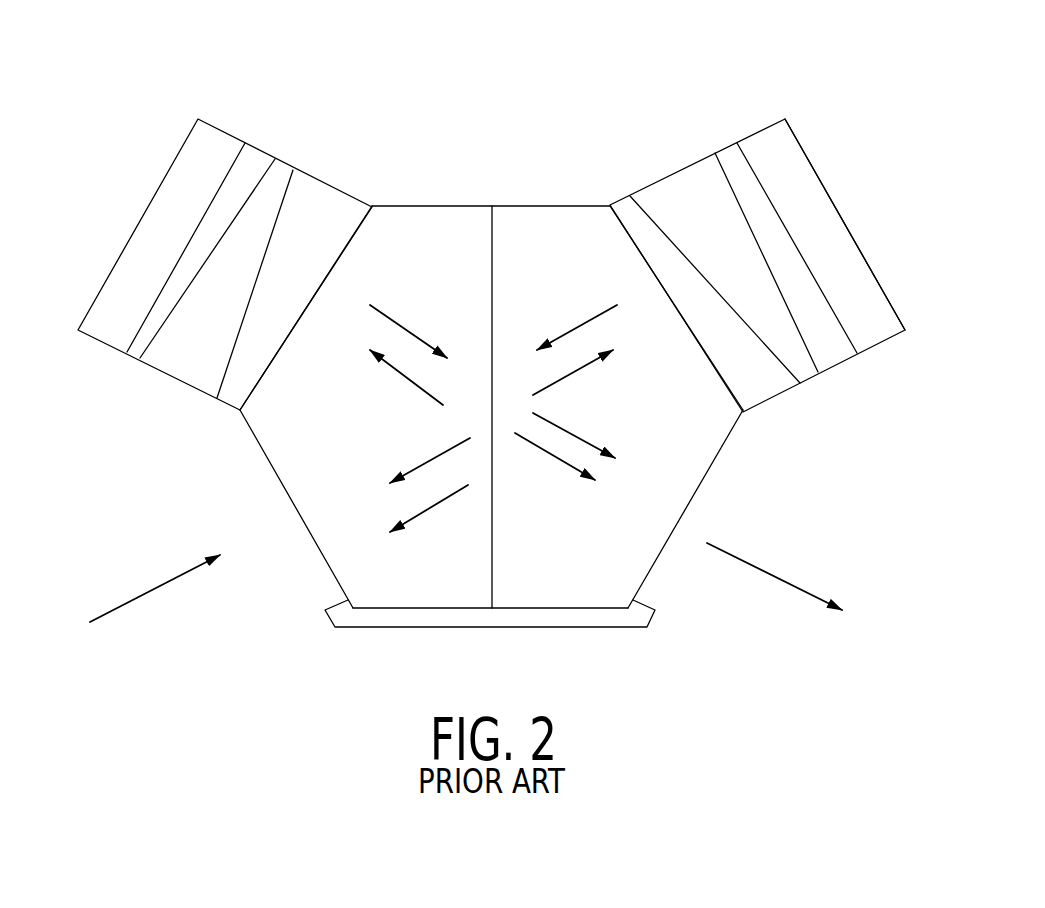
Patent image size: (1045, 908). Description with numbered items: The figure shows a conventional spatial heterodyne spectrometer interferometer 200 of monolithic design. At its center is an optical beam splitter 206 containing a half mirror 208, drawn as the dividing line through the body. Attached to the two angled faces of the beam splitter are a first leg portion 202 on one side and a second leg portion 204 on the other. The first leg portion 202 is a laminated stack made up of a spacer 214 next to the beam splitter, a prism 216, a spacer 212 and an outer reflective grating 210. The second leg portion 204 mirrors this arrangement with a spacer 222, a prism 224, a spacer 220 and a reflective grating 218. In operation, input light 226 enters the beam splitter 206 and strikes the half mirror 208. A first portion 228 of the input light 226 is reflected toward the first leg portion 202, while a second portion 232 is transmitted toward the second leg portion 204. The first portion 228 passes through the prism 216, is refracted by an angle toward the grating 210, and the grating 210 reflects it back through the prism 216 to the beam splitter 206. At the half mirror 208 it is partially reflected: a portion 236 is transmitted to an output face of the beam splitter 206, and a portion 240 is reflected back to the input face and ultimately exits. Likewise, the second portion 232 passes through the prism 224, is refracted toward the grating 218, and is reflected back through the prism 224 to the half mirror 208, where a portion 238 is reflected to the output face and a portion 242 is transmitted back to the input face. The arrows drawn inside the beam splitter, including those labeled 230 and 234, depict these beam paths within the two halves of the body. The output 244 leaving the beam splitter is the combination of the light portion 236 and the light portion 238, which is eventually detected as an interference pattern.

The interferometer 200 is at (138, 80).
The first leg portion 202 is at (200, 287).
The second leg portion 204 is at (778, 262).
The optical beam splitter 206 is at (432, 228).
The half mirror 208 is at (491, 247).
The reflective grating 210 is at (155, 257).
The spacer 212 is at (240, 188).
The spacer 214 is at (337, 215).
The prism 216 is at (180, 357).
The reflective grating 218 is at (847, 263).
The spacer 220 is at (767, 223).
The spacer 222 is at (623, 210).
The prism 224 is at (697, 195).
The input light 226 is at (155, 590).
The first portion of input light 228 is at (410, 380).
The transmitted beam 230 is at (402, 327).
The second portion of input light 232 is at (570, 377).
The transmitted beam 234 is at (572, 327).
The light portion 236 is at (548, 460).
The light portion 238 is at (578, 433).
The light portion 240 is at (443, 497).
The light portion 242 is at (435, 458).
The output 244 is at (778, 580).